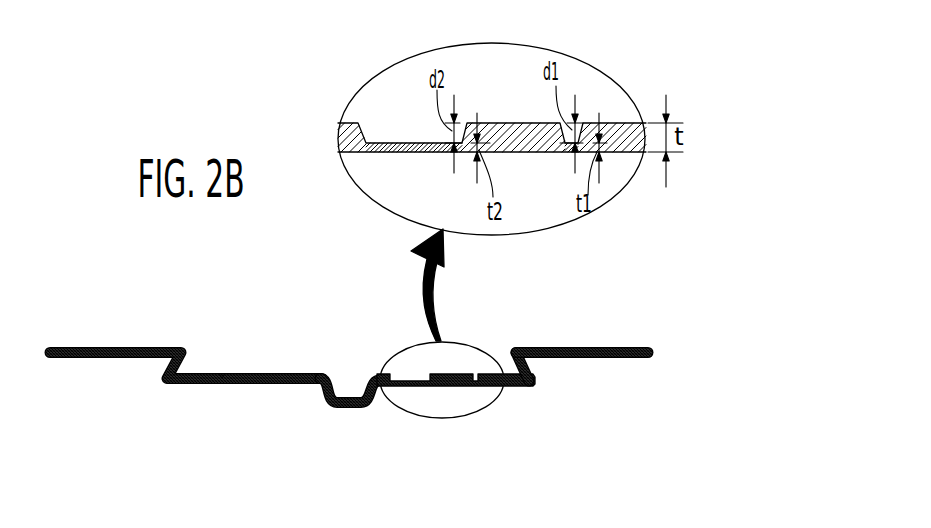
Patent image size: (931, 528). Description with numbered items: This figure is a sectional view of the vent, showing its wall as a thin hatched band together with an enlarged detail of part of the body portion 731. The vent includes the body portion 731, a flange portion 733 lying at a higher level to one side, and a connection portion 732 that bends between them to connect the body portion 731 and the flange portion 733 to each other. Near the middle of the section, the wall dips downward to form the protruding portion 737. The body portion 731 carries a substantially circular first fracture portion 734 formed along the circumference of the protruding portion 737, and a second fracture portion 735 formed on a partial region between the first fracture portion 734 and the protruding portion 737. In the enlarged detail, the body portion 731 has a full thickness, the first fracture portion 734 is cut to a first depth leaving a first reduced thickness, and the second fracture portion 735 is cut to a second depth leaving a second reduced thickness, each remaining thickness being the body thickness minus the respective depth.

The body portion 731 is at (517, 394).
The connection portion 732 is at (537, 366).
The flange portion 733 is at (583, 347).
The first fracture portion 734 is at (222, 374).
The second fracture portion 735 is at (409, 373).
The protruding portion 737 is at (340, 410).